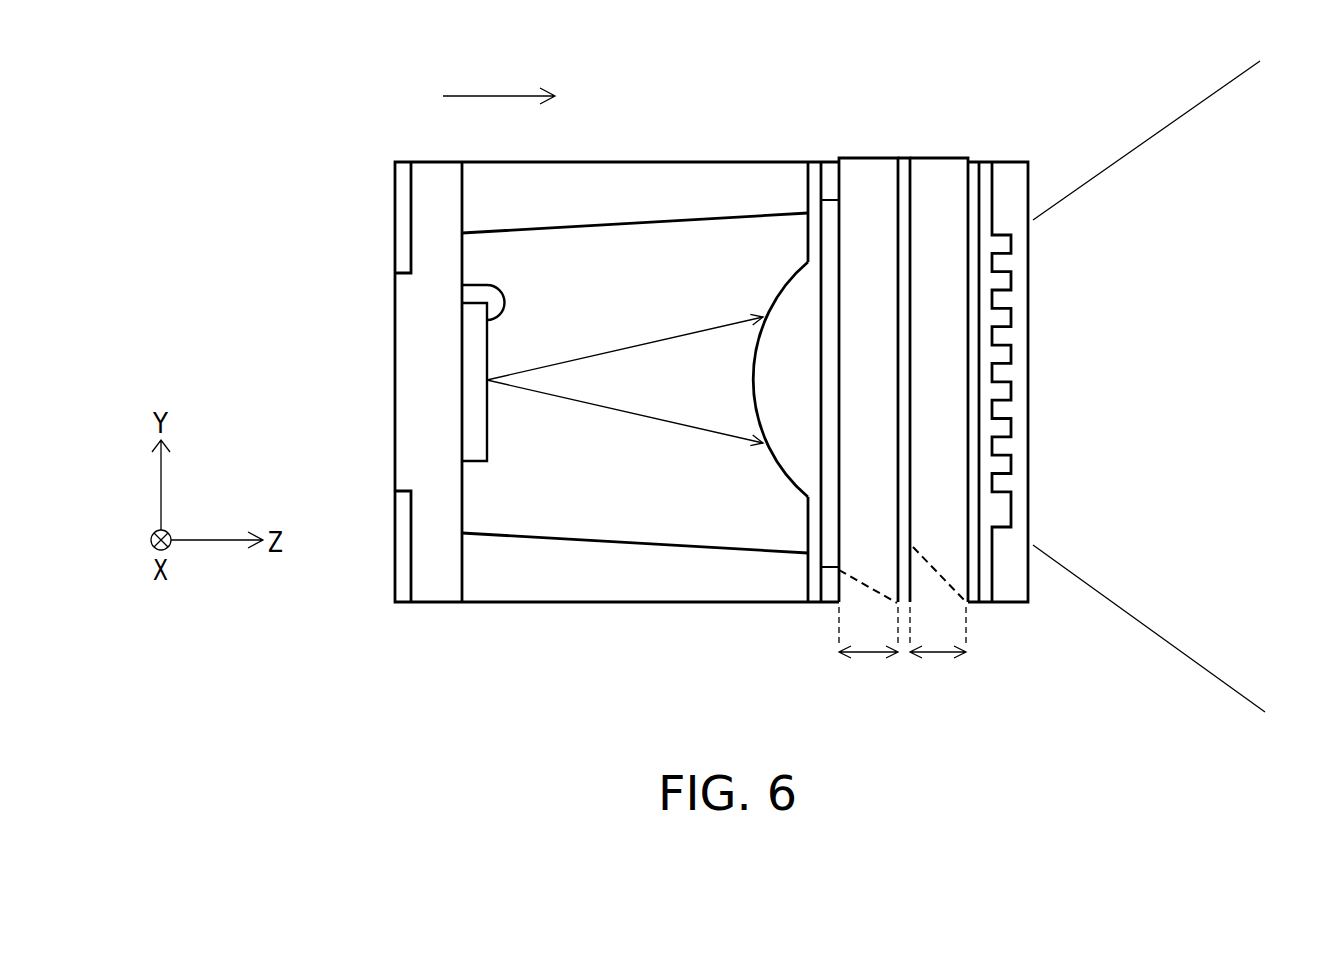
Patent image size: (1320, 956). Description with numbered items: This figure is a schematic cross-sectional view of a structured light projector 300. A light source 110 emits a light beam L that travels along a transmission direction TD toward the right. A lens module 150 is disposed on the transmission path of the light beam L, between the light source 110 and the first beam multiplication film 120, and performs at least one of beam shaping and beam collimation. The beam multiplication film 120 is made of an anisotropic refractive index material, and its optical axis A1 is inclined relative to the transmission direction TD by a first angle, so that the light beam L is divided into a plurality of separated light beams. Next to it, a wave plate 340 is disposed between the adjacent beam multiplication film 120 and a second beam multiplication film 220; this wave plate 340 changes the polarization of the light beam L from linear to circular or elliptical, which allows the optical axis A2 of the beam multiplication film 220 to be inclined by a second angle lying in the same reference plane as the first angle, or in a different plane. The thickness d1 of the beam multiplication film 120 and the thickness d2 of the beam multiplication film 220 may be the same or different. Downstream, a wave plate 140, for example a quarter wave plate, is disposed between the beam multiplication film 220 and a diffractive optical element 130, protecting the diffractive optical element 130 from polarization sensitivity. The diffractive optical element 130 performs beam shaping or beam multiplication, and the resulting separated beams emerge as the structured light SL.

The structured light projector 300 is at (370, 646).
The light source 110 is at (474, 452).
The beam multiplication film 120 is at (860, 170).
The wave plate 340 is at (904, 170).
The beam multiplication film 220 is at (936, 170).
The wave plate 140 is at (973, 170).
The diffractive optical element 130 is at (1010, 172).
The lens module 150 is at (815, 170).
The light beam L is at (627, 412).
The structured light SL is at (1158, 130).
The transmission direction TD is at (499, 83).
The optical axis A1 is at (880, 600).
The optical axis A2 is at (954, 600).
The thickness d1 is at (868, 651).
The thickness d2 is at (938, 651).